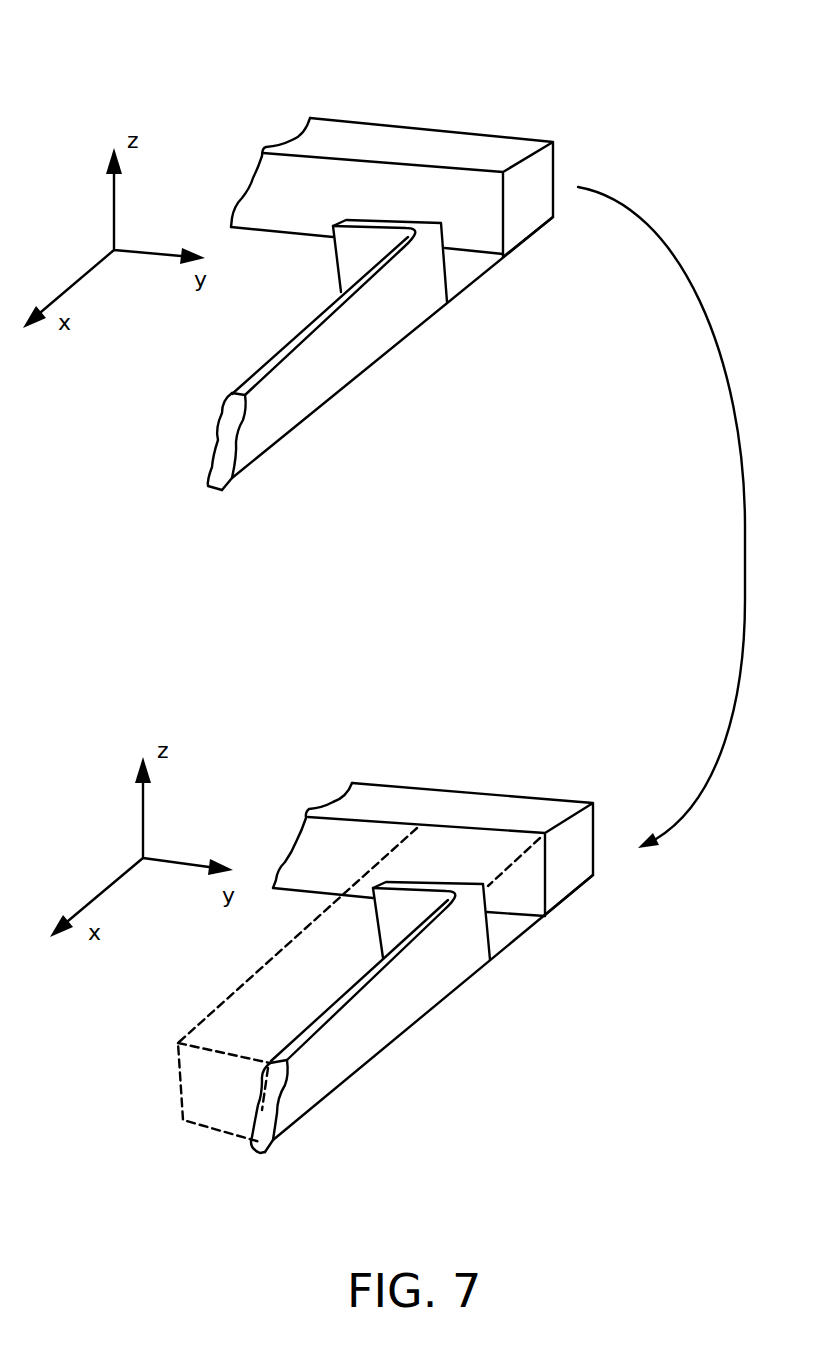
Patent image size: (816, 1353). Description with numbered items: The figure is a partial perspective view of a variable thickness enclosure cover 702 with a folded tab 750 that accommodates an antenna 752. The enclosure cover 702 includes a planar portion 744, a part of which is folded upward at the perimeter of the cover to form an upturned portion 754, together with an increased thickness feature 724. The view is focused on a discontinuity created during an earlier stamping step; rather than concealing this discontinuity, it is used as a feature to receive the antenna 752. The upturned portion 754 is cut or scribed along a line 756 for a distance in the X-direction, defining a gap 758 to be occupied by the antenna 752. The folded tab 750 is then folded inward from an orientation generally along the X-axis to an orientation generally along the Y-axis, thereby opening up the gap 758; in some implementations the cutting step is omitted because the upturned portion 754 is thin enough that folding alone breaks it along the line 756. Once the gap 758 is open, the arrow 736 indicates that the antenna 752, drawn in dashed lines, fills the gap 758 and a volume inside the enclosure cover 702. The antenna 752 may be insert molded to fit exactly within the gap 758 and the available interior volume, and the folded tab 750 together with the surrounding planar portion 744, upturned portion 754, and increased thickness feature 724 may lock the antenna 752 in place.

The variable thickness enclosure cover 702 is at (548, 92).
The increased thickness feature 724 is at (549, 207).
The arrow 736 is at (733, 442).
The planar portion 744 is at (280, 311).
The folded tab 750 is at (357, 222).
The antenna 752 is at (345, 979).
The upturned portion 754 is at (389, 342).
The line 756 is at (478, 277).
The gap 758 is at (493, 234).